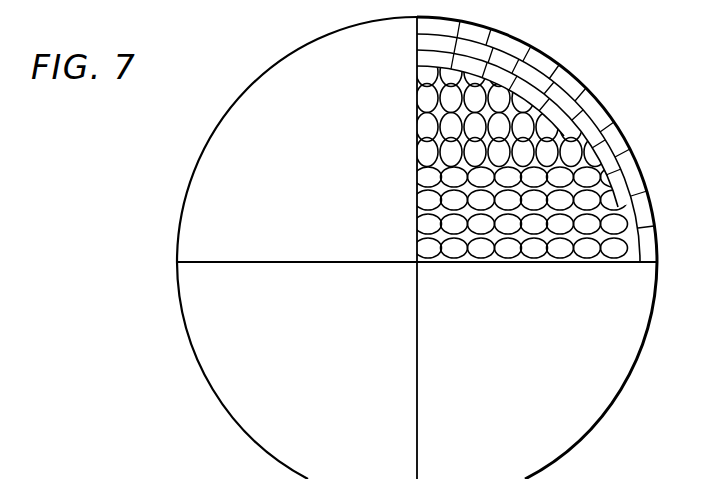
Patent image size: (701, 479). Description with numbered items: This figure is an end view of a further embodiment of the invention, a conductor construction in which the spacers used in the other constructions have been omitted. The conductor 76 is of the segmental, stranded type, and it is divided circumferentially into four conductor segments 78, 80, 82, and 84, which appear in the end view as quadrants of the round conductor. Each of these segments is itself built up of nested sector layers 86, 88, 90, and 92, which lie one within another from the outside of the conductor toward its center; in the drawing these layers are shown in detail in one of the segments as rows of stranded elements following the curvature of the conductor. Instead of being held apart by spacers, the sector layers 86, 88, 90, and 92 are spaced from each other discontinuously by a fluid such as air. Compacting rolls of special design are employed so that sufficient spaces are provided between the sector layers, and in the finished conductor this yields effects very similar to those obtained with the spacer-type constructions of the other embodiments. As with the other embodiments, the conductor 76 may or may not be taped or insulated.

The conductor 76 is at (584, 60).
The conductor segment 78 is at (253, 82).
The conductor segment 80 is at (589, 93).
The conductor segment 82 is at (646, 333).
The conductor segment 84 is at (185, 331).
The sector layer 86 is at (420, 93).
The sector layer 88 is at (453, 131).
The sector layer 90 is at (468, 163).
The sector layer 92 is at (498, 195).